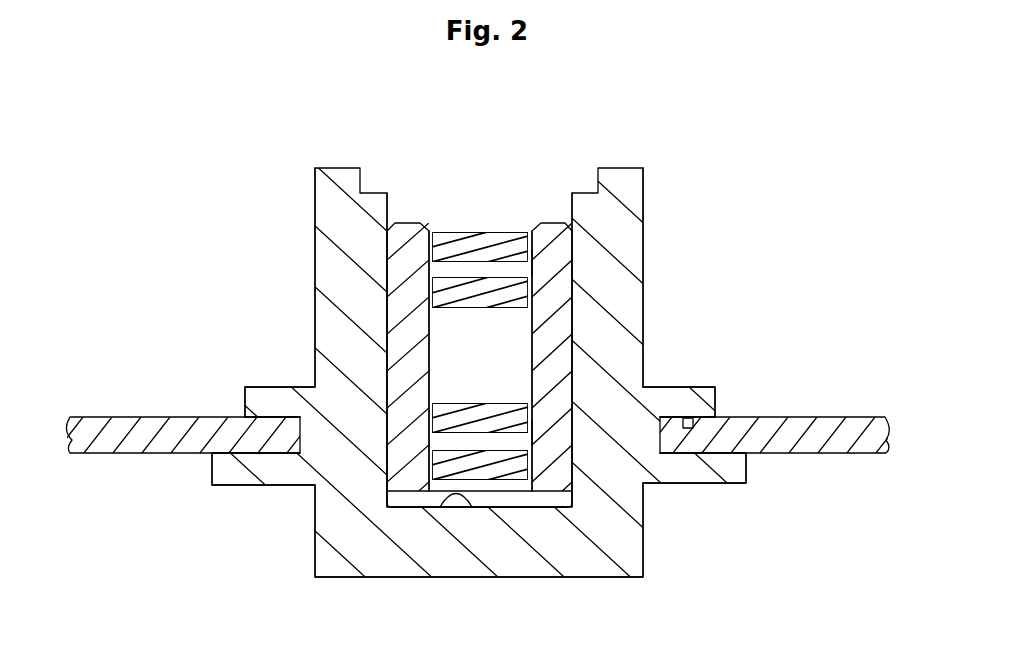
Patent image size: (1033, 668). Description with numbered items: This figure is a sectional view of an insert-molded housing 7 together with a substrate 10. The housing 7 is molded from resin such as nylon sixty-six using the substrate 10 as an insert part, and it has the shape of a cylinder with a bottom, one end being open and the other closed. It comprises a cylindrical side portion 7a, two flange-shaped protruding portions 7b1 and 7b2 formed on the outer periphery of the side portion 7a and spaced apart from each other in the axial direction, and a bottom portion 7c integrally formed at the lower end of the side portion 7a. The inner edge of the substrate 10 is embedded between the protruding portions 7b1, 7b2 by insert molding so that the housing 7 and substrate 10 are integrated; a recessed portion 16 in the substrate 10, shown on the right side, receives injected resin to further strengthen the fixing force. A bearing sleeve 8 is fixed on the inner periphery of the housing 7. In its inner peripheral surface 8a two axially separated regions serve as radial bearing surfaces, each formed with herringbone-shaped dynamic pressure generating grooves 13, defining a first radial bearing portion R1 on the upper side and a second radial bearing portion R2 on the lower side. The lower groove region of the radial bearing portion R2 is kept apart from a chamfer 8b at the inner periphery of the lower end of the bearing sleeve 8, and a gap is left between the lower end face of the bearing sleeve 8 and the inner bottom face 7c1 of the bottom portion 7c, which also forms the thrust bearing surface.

The housing 7 is at (656, 148).
The cylindrical side portion 7a is at (327, 250).
The protruding portion 7b1 is at (262, 393).
The protruding portion 7b2 is at (236, 473).
The bottom portion 7c is at (498, 560).
The inner bottom face 7c1 is at (440, 508).
The bearing sleeve 8 is at (401, 468).
The inner peripheral surface 8a is at (433, 357).
The chamfer 8b is at (533, 505).
The substrate 10 is at (836, 453).
The dynamic pressure generating grooves 13 is at (487, 243).
The recessed portion 16 is at (686, 430).
The first radial bearing portion R1 is at (550, 256).
The second radial bearing portion R2 is at (547, 423).